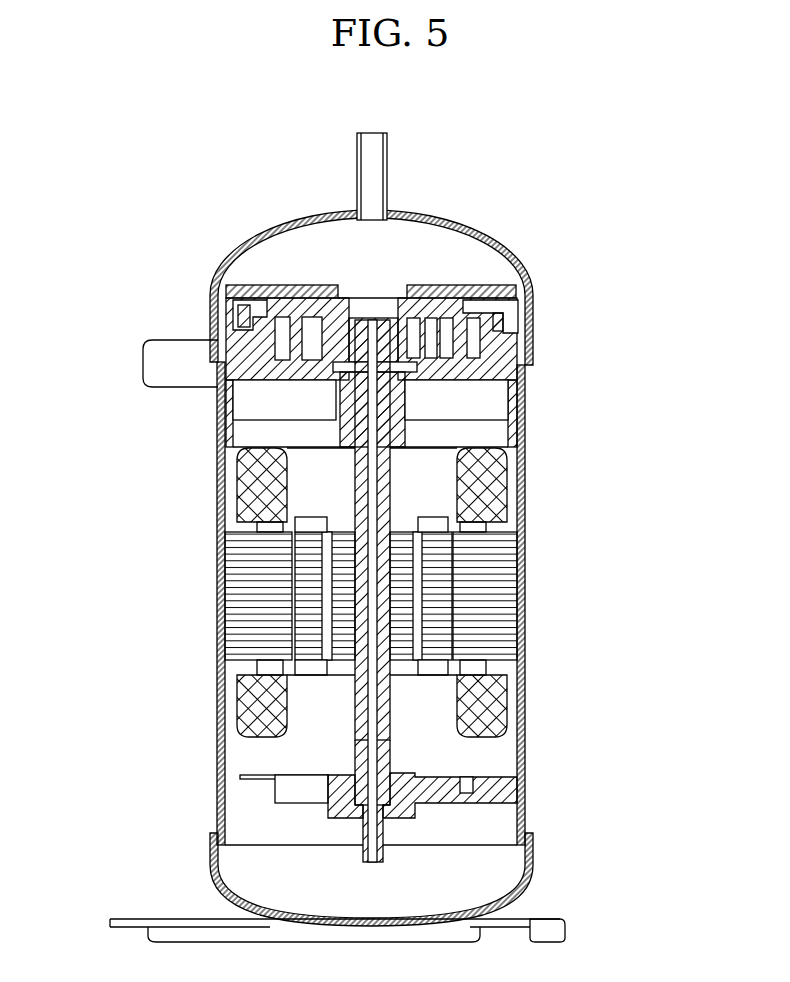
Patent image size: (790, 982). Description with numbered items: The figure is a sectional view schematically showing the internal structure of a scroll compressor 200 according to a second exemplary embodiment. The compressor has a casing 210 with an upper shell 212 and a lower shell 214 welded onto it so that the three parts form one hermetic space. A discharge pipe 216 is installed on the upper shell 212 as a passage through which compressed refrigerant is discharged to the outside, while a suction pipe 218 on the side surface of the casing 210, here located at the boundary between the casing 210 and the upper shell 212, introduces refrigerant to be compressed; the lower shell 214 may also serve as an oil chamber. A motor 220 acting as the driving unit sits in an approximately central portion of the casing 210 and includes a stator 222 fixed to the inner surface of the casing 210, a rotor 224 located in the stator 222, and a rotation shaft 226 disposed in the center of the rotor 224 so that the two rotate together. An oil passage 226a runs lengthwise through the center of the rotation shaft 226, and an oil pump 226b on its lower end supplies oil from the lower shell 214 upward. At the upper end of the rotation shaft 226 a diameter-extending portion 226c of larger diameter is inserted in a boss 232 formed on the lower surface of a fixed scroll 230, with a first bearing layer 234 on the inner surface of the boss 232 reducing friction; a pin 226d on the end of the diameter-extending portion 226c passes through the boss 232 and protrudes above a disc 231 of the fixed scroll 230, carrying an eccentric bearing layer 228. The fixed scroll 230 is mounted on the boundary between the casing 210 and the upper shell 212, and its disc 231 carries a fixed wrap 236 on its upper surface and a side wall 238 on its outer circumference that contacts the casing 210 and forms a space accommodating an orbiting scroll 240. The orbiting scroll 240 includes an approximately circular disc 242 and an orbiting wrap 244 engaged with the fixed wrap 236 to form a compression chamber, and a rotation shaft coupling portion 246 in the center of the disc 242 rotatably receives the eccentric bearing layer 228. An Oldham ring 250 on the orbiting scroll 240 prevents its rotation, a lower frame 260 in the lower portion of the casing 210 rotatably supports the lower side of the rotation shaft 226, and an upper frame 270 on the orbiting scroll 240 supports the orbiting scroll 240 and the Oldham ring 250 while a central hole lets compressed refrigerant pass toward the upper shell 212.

The scroll compressor 200 is at (613, 195).
The casing 210 is at (525, 521).
The upper shell 212 is at (495, 237).
The lower shell 214 is at (537, 873).
The discharge pipe 216 is at (388, 144).
The suction pipe 218 is at (150, 362).
The motor 220 is at (299, 592).
The stator 222 is at (240, 559).
The rotor 224 is at (300, 590).
The rotation shaft 226 is at (352, 625).
The oil passage 226a is at (390, 756).
The oil pump 226b is at (377, 831).
The diameter-extending portion 226c is at (520, 404).
The pin 226d is at (525, 358).
The eccentric bearing layer 228 is at (312, 356).
The fixed scroll 230 is at (246, 335).
The disc 231 is at (520, 368).
The boss 232 is at (325, 392).
The first bearing layer 234 is at (302, 444).
The fixed wrap 236 is at (292, 352).
The side wall 238 is at (256, 320).
The orbiting scroll 240 is at (292, 300).
The disc 242 is at (477, 289).
The orbiting wrap 244 is at (520, 342).
The rotation shaft coupling portion 246 is at (333, 335).
The Oldham ring 250 is at (515, 306).
The lower frame 260 is at (340, 797).
The upper frame 270 is at (450, 290).